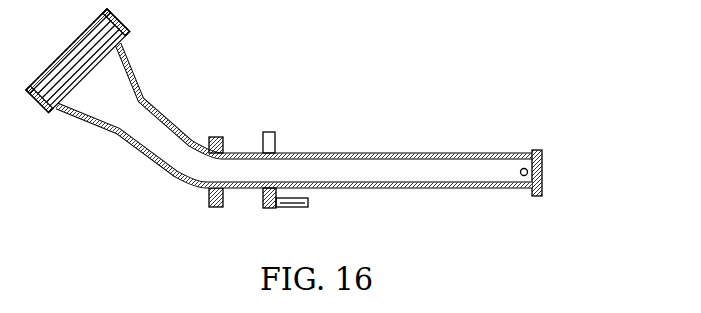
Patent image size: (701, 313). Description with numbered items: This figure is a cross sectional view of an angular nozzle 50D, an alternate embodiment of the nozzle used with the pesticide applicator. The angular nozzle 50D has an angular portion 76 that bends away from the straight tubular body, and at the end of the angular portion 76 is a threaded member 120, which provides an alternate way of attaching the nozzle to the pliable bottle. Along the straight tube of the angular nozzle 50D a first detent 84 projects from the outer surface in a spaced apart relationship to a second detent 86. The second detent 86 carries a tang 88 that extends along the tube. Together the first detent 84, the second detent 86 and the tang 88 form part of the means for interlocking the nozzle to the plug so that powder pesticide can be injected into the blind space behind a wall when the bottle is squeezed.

The angular nozzle 50D is at (380, 130).
The angular portion 76 is at (83, 113).
The threaded member 120 is at (118, 28).
The first detent 84 is at (208, 138).
The second detent 86 is at (250, 210).
The tang 88 is at (297, 210).